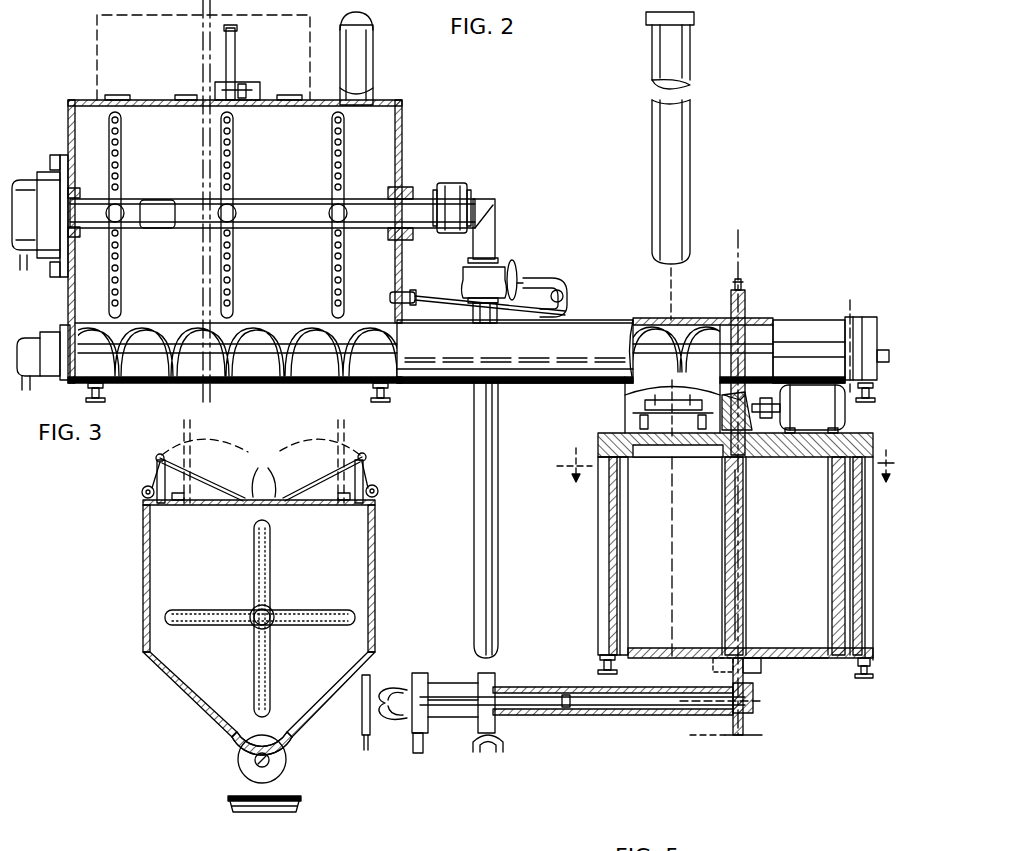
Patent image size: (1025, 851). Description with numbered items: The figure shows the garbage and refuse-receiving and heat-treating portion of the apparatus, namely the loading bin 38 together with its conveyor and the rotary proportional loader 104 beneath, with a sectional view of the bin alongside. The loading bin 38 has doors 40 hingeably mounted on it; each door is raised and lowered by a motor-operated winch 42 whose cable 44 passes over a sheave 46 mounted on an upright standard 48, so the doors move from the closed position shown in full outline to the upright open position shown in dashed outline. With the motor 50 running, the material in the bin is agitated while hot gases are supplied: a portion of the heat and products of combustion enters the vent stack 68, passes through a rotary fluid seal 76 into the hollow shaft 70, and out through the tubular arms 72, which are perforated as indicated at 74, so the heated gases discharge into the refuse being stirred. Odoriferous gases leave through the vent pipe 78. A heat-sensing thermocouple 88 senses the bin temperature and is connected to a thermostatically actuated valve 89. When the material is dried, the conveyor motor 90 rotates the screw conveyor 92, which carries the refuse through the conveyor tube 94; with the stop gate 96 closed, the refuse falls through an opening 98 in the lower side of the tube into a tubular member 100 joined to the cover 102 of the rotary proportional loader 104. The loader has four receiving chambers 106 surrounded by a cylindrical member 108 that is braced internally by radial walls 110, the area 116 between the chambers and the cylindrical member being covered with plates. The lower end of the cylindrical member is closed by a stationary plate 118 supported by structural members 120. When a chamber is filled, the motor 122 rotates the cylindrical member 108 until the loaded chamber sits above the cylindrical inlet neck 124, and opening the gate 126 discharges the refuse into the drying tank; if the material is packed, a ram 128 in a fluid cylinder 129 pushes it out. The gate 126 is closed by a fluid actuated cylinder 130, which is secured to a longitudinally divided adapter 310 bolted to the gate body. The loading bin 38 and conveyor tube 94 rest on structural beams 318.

In FIG. 2, the loading bin 38 is at (66, 118).
In FIG. 3, the loading bin 38 is at (142, 601).
In FIG. 2, the doors 40 is at (155, 98).
In FIG. 3, the doors 40 is at (276, 497).
In FIG. 3, the winches 42 is at (146, 498).
In FIG. 3, the cable 44 is at (155, 472).
In FIG. 3, the sheave 46 is at (158, 458).
In FIG. 3, the upright standard 48 is at (150, 490).
In FIG. 2, the motor 50 is at (18, 180).
In FIG. 2, the vent stack 68 is at (498, 505).
In FIG. 2, the hollow shaft 70 is at (365, 205).
In FIG. 3, the hollow shaft 70 is at (252, 626).
In FIG. 2, the arms 72 is at (233, 296).
In FIG. 3, the arms 72 is at (318, 626).
In FIG. 2, the perforations 74 is at (232, 257).
In FIG. 3, the perforations 74 is at (303, 615).
In FIG. 2, the rotary fluid seal 76 is at (445, 190).
In FIG. 2, the vent pipe 78 is at (373, 57).
In FIG. 2, the heat-sensing thermocouple 88 is at (412, 300).
In FIG. 2, the thermostatically actuated valve 89 is at (500, 263).
In FIG. 2, the conveyor motor 90 is at (30, 340).
In FIG. 2, the screw conveyor 92 is at (250, 355).
In FIG. 3, the screw conveyor 92 is at (287, 762).
In FIG. 2, the conveyor tube 94 is at (570, 330).
In FIG. 2, the stop gate 96 is at (746, 280).
In FIG. 2, the opening 98 is at (628, 378).
In FIG. 2, the tubular member 100 is at (650, 378).
In FIG. 2, the cover 102 is at (792, 452).
In FIG. 2, the rotary proportional loader 104 is at (592, 598).
In FIG. 2, the receiving chambers 106 is at (835, 632).
In FIG. 2, the cylindrical member 108 is at (606, 618).
In FIG. 2, the radial walls 110 is at (742, 562).
In FIG. 2, the area 116 is at (612, 470).
In FIG. 2, the stationary plate 118 is at (818, 650).
In FIG. 2, the structural members 120 is at (864, 680).
In FIG. 2, the motor 122 is at (838, 411).
In FIG. 2, the cylindrical inlet neck 124 is at (745, 724).
In FIG. 2, the gate 126 is at (563, 717).
In FIG. 2, the ram 128 is at (600, 442).
In FIG. 2, the fluid cylinder 129 is at (693, 168).
In FIG. 2, the fluid actuated cylinder and plunger arrangement 130 is at (398, 690).
In FIG. 2, the longitudinally divided adapter 310 is at (445, 720).
In FIG. 2, the structural beams 318 is at (392, 392).
In FIG. 3, the structural beams 318 is at (300, 807).